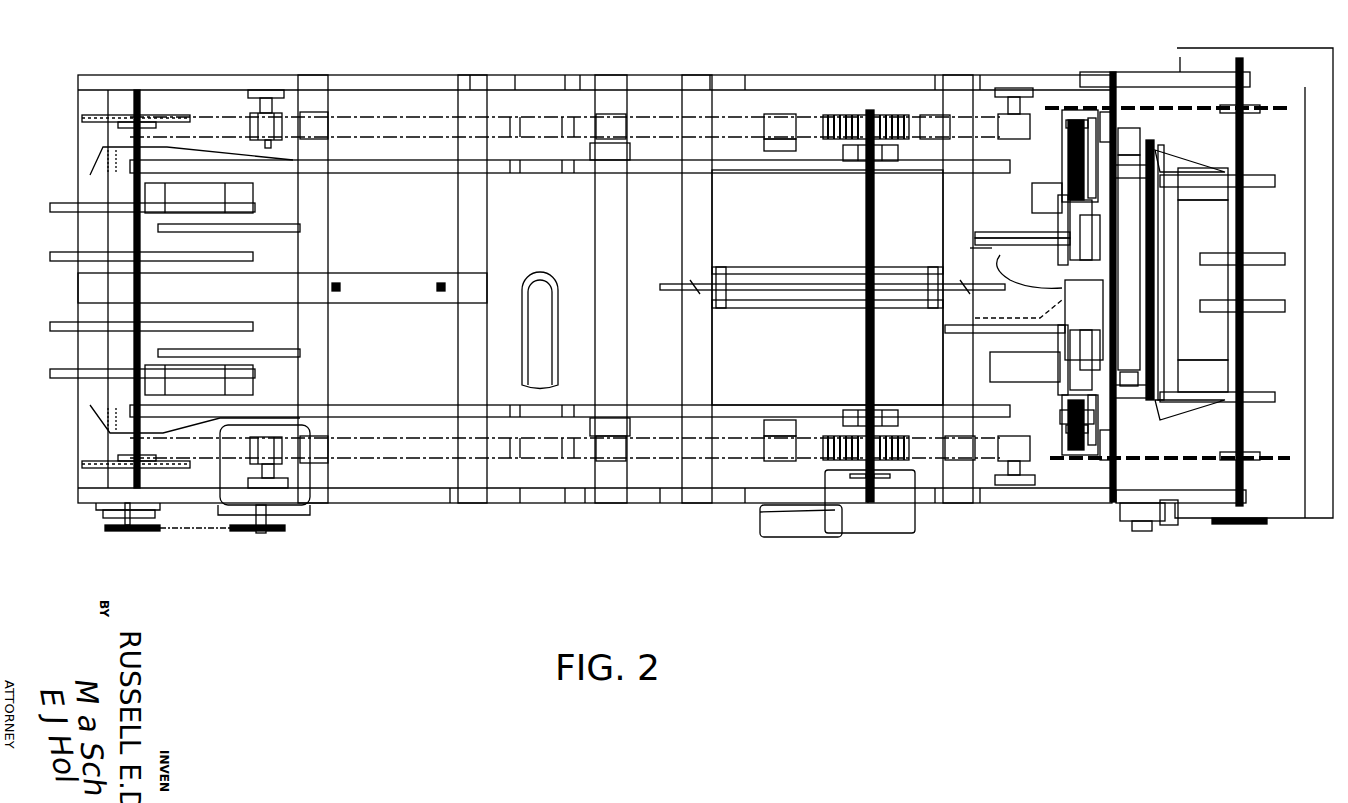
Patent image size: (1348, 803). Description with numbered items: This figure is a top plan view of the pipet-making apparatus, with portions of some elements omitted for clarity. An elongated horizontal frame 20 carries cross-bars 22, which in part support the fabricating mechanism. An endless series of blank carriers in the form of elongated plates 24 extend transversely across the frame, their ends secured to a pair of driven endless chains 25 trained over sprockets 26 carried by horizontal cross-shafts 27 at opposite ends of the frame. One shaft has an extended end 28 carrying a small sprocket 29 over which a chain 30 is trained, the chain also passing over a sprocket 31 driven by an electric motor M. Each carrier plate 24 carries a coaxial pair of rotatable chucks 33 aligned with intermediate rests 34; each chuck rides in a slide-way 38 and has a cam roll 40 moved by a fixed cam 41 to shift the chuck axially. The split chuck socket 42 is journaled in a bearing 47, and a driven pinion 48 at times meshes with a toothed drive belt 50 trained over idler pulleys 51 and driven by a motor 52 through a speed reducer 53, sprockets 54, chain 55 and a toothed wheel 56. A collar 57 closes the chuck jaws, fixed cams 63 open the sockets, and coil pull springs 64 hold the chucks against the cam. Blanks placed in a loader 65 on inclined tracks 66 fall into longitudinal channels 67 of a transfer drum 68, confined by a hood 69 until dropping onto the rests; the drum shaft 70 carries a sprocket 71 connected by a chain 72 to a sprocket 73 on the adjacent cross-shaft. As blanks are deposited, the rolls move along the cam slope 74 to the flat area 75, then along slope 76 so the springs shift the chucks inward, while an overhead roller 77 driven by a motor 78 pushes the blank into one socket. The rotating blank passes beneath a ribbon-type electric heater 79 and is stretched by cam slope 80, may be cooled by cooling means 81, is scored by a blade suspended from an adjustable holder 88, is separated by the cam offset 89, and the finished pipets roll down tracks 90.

The horizontal frame 20 is at (429, 512).
The crossbars 22 is at (320, 237).
The elongated plate 24 is at (1068, 252).
The driven endless chains 25 is at (1180, 99).
The sprocket 26 is at (158, 120).
The horizontal cross-shaft 27 is at (141, 282).
The shaft end 28 is at (110, 525).
The small sprocket 29 is at (118, 535).
The chain 30 is at (195, 530).
The sprocket 31 is at (272, 535).
The rotatable blank chuck 33 is at (1056, 162).
The intermediate rest 34 is at (1084, 292).
The slide-way 38 is at (1120, 286).
The cam roll 40 is at (1085, 144).
The fixed cam 41 is at (362, 168).
The split chuck socket 42 is at (1062, 200).
The bearing 47 is at (1066, 425).
The driven pinion 48 is at (1068, 445).
The toothed drive belt 50 is at (360, 138).
The idler pulley 51 is at (300, 124).
The motor 52 is at (800, 528).
The speed reducer 53 is at (897, 523).
The sprockets 54 is at (858, 480).
The chain 55 is at (880, 480).
The toothed wheel 56 is at (897, 116).
The collar 57 is at (1038, 190).
The fixed cam 63 is at (245, 193).
The coil pull spring 64 is at (1060, 205).
The loader 65 is at (1210, 251).
The inclined tracks 66 is at (1258, 190).
The longitudinal channels 67 is at (1158, 318).
The transfer drum 68 is at (1166, 330).
The hood 69 is at (1131, 249).
The horizontal shaft 70 is at (1160, 460).
The sprocket 71 is at (1138, 535).
The chain 72 is at (1176, 528).
The sprocket 73 is at (1232, 528).
The cam slope 74 is at (1203, 166).
The flat area 75 is at (1172, 135).
The cam slope 76 is at (1128, 410).
The overhead roller 77 is at (1060, 320).
The motor 78 is at (1035, 290).
The ribbon-type electric heater 79 is at (800, 300).
The cam slope 80 is at (646, 150).
The cooling means 81 is at (548, 345).
The holder 88 is at (378, 300).
The offset 89 is at (198, 150).
The tracks 90 is at (240, 262).
The electric motor M is at (300, 518).